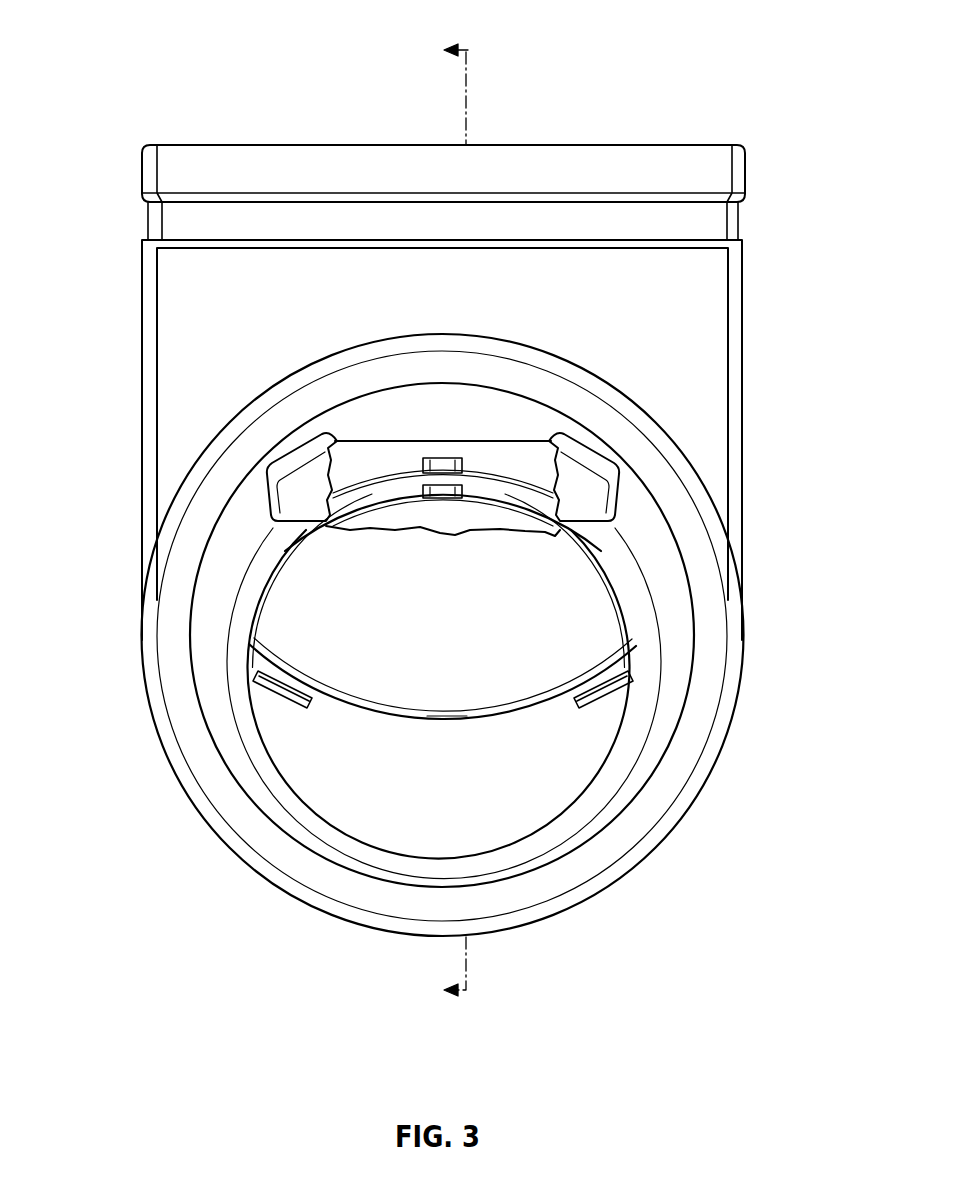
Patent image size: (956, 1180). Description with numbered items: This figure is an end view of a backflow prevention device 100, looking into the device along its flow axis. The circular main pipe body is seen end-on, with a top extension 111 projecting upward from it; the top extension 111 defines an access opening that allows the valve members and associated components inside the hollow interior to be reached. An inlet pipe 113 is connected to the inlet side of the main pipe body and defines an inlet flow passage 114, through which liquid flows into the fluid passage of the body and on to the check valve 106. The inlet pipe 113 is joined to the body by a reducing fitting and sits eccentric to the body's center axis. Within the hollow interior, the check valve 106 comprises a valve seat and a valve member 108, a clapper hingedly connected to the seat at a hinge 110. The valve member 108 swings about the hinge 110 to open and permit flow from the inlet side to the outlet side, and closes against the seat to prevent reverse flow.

The backflow prevention device 100 is at (436, 507).
The check valve 106 is at (317, 607).
The valve member 108 is at (395, 672).
The hinge 110 is at (585, 483).
The top extension 111 is at (735, 184).
The inlet pipe 113 is at (720, 510).
The inlet flow passage 114 is at (507, 787).